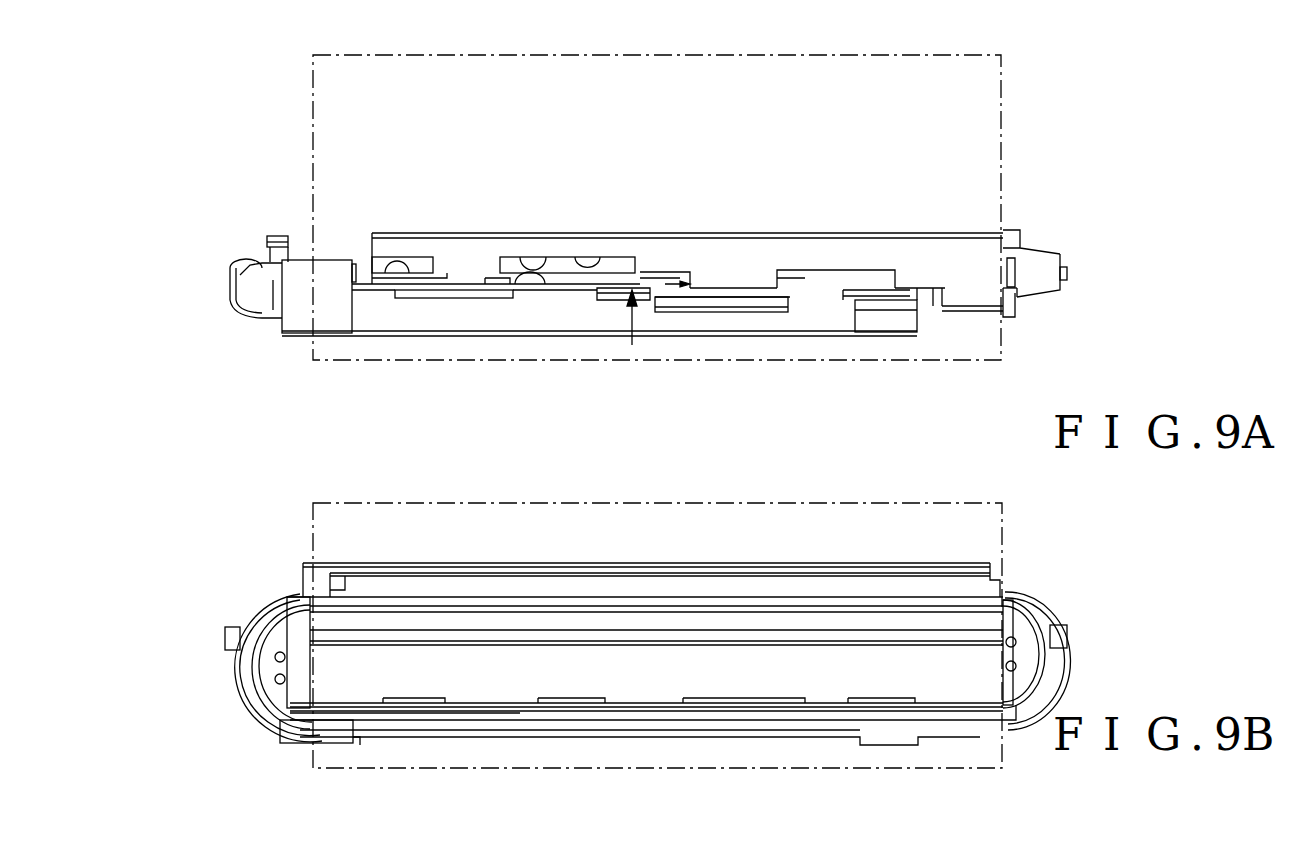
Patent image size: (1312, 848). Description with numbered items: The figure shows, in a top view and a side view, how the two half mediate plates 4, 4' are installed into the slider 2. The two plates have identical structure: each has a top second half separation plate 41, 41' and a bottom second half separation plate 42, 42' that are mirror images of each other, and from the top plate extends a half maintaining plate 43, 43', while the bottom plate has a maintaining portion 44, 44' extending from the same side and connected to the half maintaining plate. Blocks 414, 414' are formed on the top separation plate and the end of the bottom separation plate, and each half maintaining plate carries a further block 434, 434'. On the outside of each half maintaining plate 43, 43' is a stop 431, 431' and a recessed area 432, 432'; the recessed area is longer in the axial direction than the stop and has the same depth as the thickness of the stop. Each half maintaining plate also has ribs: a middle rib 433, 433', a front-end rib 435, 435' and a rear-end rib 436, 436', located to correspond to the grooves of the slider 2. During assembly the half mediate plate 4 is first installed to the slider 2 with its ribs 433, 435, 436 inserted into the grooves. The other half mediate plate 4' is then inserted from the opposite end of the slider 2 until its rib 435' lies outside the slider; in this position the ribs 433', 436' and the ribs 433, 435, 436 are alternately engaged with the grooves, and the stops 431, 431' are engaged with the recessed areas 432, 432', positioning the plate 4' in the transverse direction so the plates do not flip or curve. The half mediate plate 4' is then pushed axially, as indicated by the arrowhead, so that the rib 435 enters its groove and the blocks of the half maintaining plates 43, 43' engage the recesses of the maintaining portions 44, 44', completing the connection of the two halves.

In FIG. 9A, the slider 2 is at (405, 103).
In FIG. 9B, the slider 2 is at (318, 547).
In FIG. 9A, the half mediate plate 4 is at (1051, 264).
In FIG. 9A, the half mediate plate 4' is at (227, 288).
In FIG. 9A, the top second half separation plate 41 is at (1040, 214).
In FIG. 9A, the top second half separation plate 41' is at (538, 334).
In FIG. 9A, the bottom second half separation plate 42 is at (1046, 318).
In FIG. 9A, the bottom second half separation plate 42' is at (244, 221).
In FIG. 9A, the half maintaining plate 43 is at (687, 226).
In FIG. 9A, the half maintaining plate 43' is at (677, 354).
In FIG. 9A, the maintaining portion 44 is at (1026, 339).
In FIG. 9A, the maintaining portion 44' is at (319, 249).
In FIG. 9A, the block 414 is at (1111, 273).
In FIG. 9B, the block 414 is at (1095, 605).
In FIG. 9A, the block 414' is at (227, 243).
In FIG. 9B, the block 414' is at (205, 630).
In FIG. 9A, the stop 431 is at (788, 237).
In FIG. 9A, the stop 431' is at (470, 358).
In FIG. 9A, the recessed area 432 is at (503, 231).
In FIG. 9A, the recessed area 432' is at (772, 341).
In FIG. 9B, the rib 433 is at (645, 588).
In FIG. 9B, the rib 433' is at (653, 606).
In FIG. 9A, the block 434 is at (1088, 298).
In FIG. 9A, the block 434' is at (220, 301).
In FIG. 9B, the rib 435 is at (1038, 632).
In FIG. 9B, the rib 435' is at (377, 606).
In FIG. 9B, the rib 436 is at (389, 589).
In FIG. 9B, the rib 436' is at (946, 587).